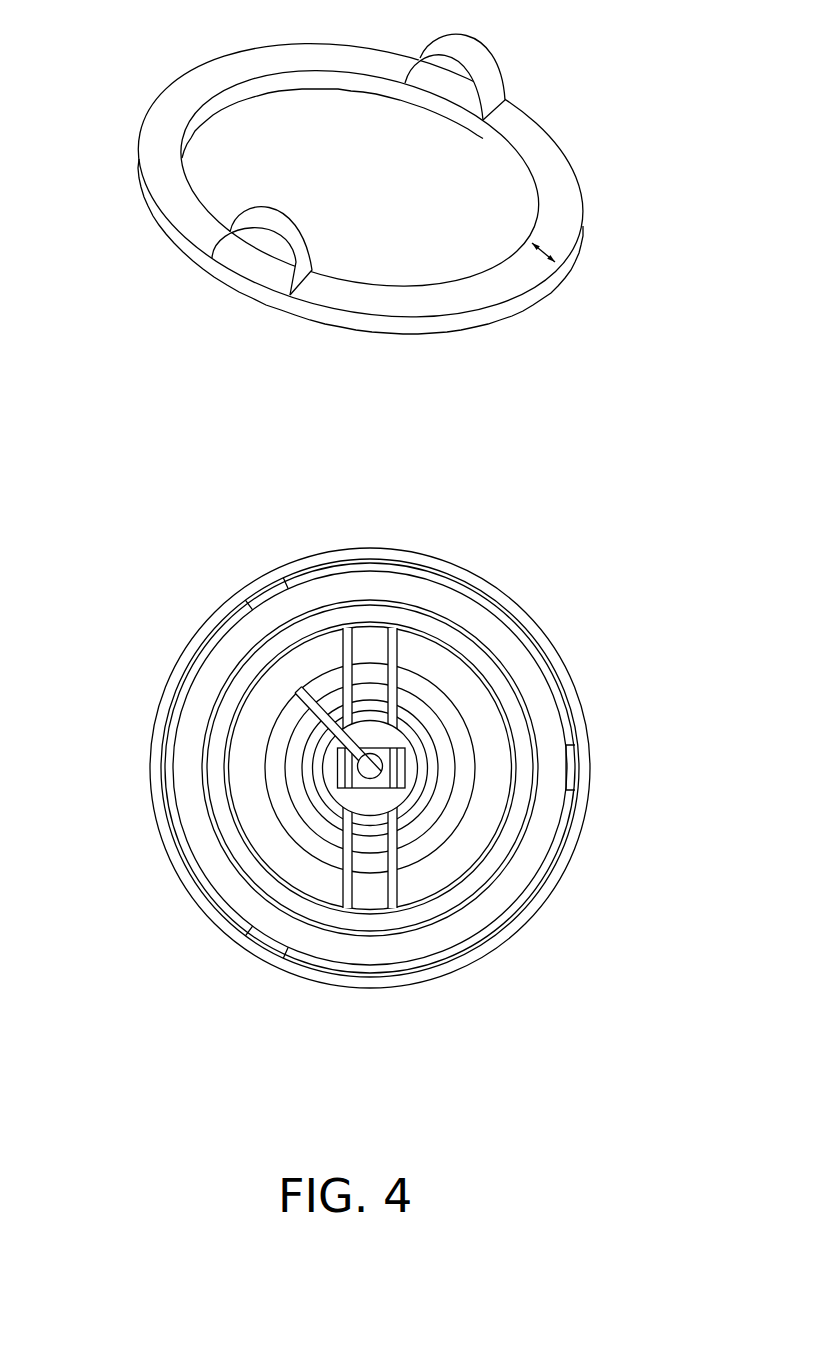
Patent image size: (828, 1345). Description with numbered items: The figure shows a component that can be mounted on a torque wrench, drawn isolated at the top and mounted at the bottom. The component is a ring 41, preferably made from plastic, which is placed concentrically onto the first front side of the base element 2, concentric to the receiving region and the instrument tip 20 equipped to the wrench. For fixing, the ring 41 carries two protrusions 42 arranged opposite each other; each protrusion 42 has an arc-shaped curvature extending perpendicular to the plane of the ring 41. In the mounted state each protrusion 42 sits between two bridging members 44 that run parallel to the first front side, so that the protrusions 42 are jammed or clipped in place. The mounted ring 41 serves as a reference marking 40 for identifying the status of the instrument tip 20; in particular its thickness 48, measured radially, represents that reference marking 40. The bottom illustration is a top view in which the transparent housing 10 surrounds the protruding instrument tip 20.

The base element 2 is at (542, 783).
The transparent housing 10 is at (581, 705).
The instrument tip 20 is at (318, 718).
The reference marking 40 is at (403, 439).
The ring 41 is at (558, 218).
The protrusions 42 is at (490, 67).
The bridging members 44 is at (393, 650).
The thickness 48 is at (557, 263).